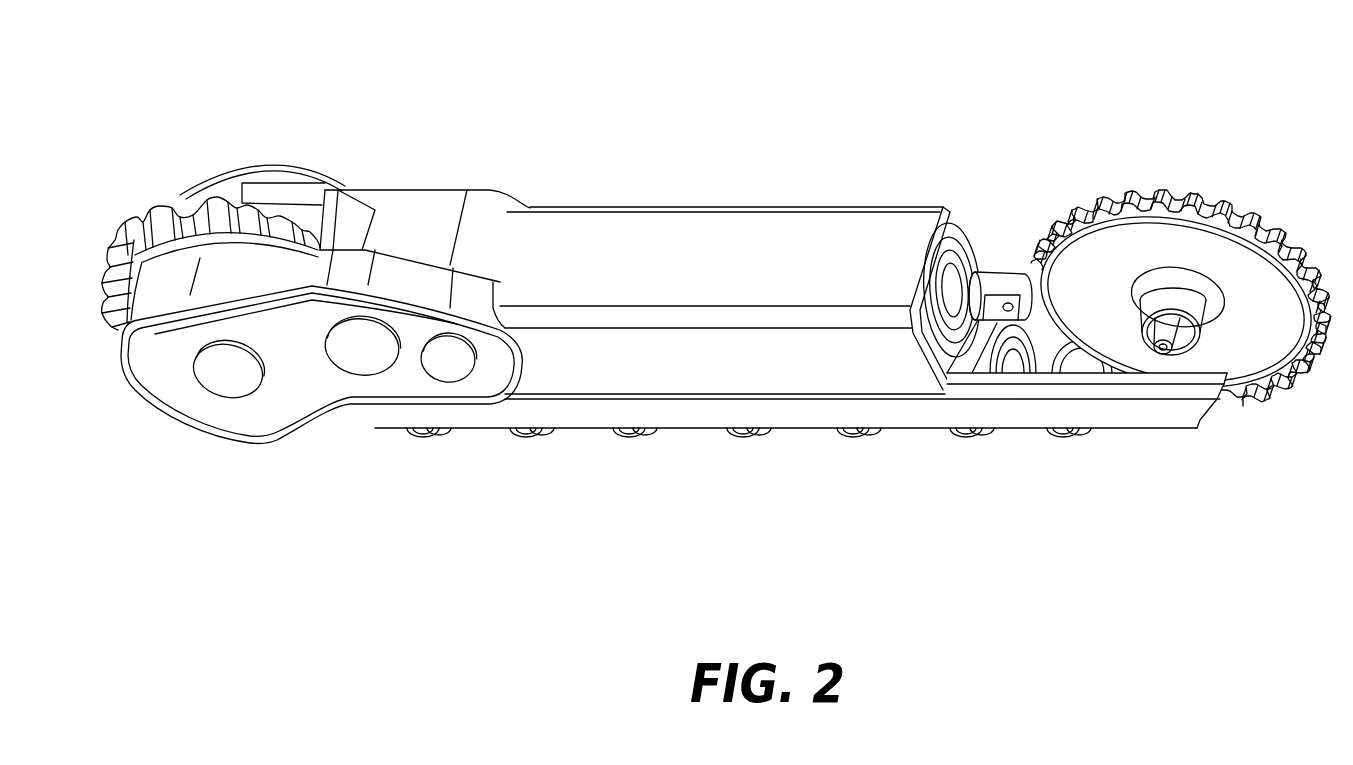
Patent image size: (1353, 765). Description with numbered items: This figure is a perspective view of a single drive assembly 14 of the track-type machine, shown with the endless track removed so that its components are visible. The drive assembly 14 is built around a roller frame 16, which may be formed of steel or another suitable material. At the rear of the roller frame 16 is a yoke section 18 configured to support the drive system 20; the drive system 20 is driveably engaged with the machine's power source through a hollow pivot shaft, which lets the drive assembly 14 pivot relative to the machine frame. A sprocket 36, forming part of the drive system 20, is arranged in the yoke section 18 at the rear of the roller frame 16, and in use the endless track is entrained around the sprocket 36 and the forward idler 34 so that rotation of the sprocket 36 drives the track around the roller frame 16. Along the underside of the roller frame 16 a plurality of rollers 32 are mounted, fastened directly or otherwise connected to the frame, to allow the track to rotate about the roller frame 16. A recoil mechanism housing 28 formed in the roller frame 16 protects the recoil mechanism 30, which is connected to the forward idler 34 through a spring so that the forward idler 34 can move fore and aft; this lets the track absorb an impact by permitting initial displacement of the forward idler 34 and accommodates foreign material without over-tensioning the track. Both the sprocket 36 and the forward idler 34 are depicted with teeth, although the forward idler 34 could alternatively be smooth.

The drive assembly 14 is at (880, 131).
The roller frame 16 is at (582, 417).
The yoke section 18 is at (426, 189).
The drive system 20 is at (162, 168).
The recoil mechanism housing 28 is at (946, 212).
The recoil mechanism 30 is at (1003, 275).
The rollers 32 is at (746, 438).
The forward idler 34 is at (1232, 280).
The sprocket 36 is at (137, 267).